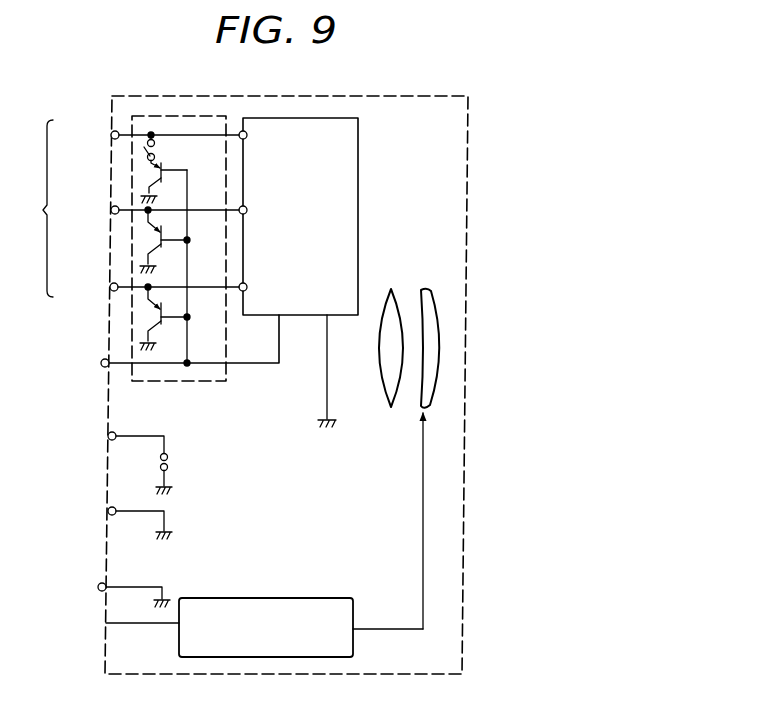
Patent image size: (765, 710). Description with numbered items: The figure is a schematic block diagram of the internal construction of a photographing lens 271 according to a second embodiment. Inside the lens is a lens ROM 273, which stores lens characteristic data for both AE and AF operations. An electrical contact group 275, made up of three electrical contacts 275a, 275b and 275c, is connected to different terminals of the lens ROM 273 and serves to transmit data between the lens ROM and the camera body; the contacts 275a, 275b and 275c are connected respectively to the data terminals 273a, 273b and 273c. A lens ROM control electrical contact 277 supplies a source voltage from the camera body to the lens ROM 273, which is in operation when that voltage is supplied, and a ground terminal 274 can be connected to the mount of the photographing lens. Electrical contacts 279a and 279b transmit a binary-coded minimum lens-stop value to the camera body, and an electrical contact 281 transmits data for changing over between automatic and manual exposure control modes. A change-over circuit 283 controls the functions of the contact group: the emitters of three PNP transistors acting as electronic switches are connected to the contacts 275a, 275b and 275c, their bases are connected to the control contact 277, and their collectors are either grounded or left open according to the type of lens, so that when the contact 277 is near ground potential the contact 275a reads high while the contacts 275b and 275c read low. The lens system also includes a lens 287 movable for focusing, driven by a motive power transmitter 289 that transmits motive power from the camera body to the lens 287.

The photographing lens 271 is at (419, 99).
The lens ROM 273 is at (340, 117).
The data terminal 273a is at (271, 135).
The data terminal 273b is at (271, 210).
The data terminal 273c is at (270, 287).
The ground terminal 274 is at (327, 399).
The electrical contact group 275 is at (30, 208).
The electrical contact 275a is at (148, 135).
The electrical contact 275b is at (148, 210).
The electrical contact 275c is at (148, 287).
The lens ROM control electrical contact 277 is at (173, 345).
The electrical contact 279a is at (113, 459).
The electrical contact 279b is at (113, 519).
The electrical contact 281 is at (112, 591).
The change-over circuit 283 is at (205, 115).
The lens 287 is at (428, 286).
The motive power transmitter 289 is at (303, 598).